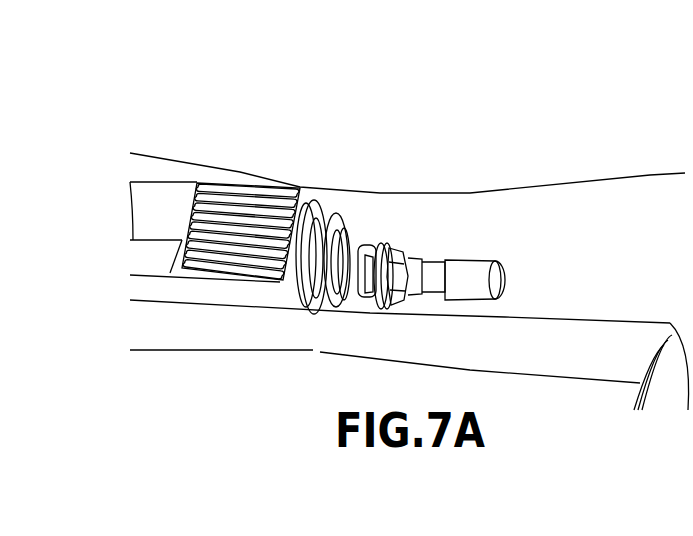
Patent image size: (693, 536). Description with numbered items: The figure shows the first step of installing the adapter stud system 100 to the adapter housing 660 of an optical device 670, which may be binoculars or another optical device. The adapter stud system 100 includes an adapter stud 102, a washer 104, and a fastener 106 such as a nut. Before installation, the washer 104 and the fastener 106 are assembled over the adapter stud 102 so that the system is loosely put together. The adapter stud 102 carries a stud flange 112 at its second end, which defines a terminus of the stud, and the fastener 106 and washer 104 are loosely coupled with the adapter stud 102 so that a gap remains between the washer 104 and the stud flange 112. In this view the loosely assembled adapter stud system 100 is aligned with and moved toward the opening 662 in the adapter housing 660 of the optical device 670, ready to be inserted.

The adapter stud system 100 is at (433, 229).
The adapter stud 102 is at (462, 263).
The washer 104 is at (388, 245).
The fastener 106 is at (404, 245).
The stud flange 112 is at (368, 298).
The adapter housing 660 is at (330, 230).
The opening 662 is at (340, 240).
The optical device 670 is at (213, 172).